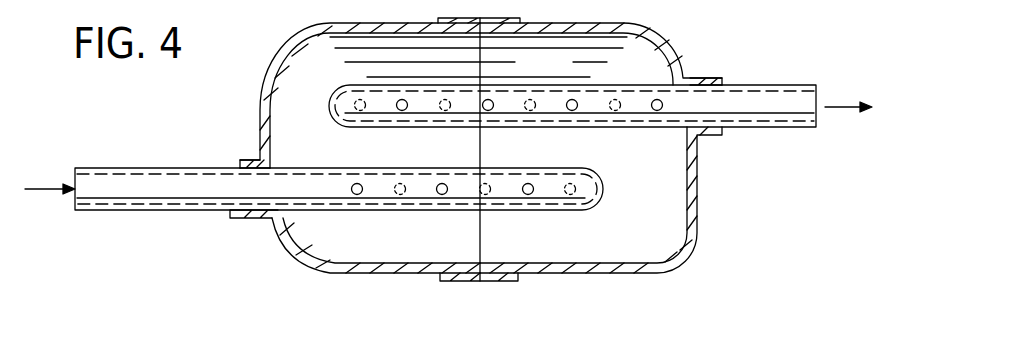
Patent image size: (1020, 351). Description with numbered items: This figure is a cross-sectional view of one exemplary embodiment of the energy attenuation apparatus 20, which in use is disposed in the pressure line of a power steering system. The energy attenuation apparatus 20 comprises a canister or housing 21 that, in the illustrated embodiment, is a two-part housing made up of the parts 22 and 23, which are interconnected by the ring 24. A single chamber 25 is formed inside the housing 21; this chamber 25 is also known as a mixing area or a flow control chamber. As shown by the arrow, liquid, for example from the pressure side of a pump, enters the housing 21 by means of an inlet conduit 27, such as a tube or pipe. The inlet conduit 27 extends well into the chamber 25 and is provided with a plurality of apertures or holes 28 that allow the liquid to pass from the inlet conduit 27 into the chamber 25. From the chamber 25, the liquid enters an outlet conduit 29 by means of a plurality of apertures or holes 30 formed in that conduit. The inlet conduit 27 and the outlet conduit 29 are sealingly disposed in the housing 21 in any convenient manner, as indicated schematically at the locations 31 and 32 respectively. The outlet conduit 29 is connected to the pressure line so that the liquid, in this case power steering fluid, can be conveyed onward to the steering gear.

The energy attenuation apparatus 20 is at (693, 265).
The housing 21 is at (697, 194).
The housing part 22 is at (600, 275).
The housing part 23 is at (385, 275).
The ring 24 is at (488, 283).
The chamber 25 is at (330, 150).
The inlet conduit 27 is at (132, 183).
The apertures 28 is at (402, 183).
The outlet conduit 29 is at (780, 127).
The apertures 30 is at (491, 104).
The sealing location 31 is at (240, 217).
The sealing location 32 is at (728, 79).